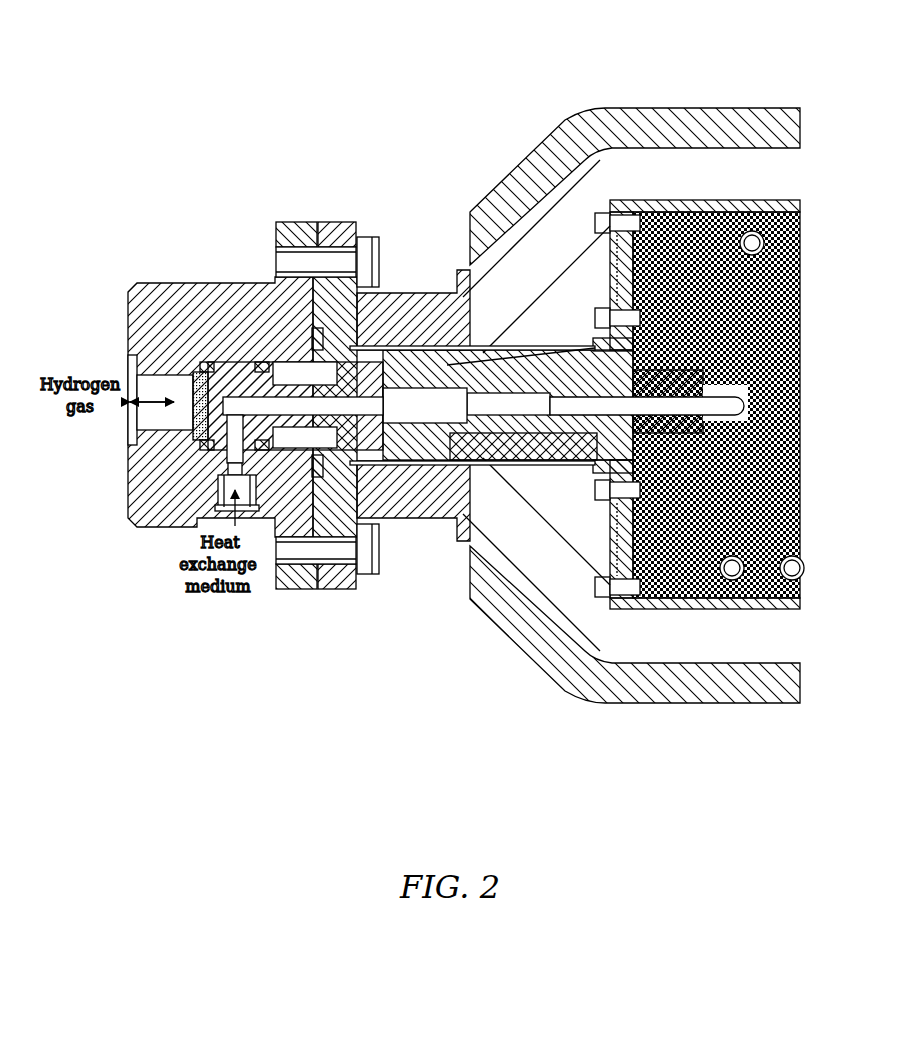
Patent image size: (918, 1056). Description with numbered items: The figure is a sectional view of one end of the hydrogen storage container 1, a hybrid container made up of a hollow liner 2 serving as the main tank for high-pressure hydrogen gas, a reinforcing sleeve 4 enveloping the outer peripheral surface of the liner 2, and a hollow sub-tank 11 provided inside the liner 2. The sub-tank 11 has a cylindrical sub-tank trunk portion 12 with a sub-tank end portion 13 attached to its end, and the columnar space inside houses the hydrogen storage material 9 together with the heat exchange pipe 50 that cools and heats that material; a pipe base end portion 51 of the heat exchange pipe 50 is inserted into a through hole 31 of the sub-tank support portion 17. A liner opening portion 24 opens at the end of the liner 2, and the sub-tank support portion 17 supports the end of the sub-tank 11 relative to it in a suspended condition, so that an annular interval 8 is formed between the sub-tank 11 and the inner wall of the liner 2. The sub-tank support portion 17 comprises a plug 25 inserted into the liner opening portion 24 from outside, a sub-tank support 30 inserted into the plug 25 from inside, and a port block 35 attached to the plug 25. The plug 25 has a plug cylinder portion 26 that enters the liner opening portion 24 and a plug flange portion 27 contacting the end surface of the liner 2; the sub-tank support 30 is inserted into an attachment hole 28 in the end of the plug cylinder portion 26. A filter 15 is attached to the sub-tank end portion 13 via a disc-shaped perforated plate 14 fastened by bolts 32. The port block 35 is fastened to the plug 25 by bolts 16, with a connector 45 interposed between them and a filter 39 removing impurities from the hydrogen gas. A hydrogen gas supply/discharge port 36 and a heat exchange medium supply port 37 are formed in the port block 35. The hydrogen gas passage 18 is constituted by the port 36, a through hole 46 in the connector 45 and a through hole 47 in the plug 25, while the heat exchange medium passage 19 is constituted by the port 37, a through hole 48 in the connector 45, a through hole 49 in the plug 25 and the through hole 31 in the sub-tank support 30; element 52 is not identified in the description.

The hydrogen storage container 1 is at (157, 274).
The liner 2 is at (584, 122).
The reinforcing sleeve 4 is at (603, 142).
The annular interval 8 is at (660, 192).
The hydrogen storage material 9 is at (690, 585).
The sub-tank 11 is at (650, 785).
The sub-tank trunk portion 12 is at (697, 609).
The sub-tank end portion 13 is at (650, 609).
The perforated plate 14 is at (606, 664).
The filter 15 is at (613, 610).
The bolt 16 is at (366, 562).
The sub-tank support portion 17 is at (404, 356).
The hydrogen gas passage 18 is at (193, 100).
The heat exchange medium passage 19 is at (255, 790).
The liner opening portion 24 is at (446, 336).
The plug 25 is at (350, 665).
The plug cylinder portion 26 is at (404, 462).
The plug flange portion 27 is at (340, 582).
The attachment hole 28 is at (436, 462).
The sub-tank support 30 is at (513, 412).
The through hole 31 is at (468, 480).
The bolt 32 is at (568, 462).
The port block 35 is at (146, 521).
The hydrogen gas supply/discharge port 36 is at (186, 394).
The heat exchange medium supply port 37 is at (271, 520).
The filter 39 is at (213, 384).
The connector 45 is at (214, 503).
The through hole 46 is at (241, 372).
The through hole 47 is at (333, 322).
The through hole 48 is at (314, 560).
The through hole 49 is at (440, 472).
The heat exchange pipe 50 is at (740, 40).
The pipe base end portion 51 is at (748, 585).
The cooling hole 52 is at (778, 585).